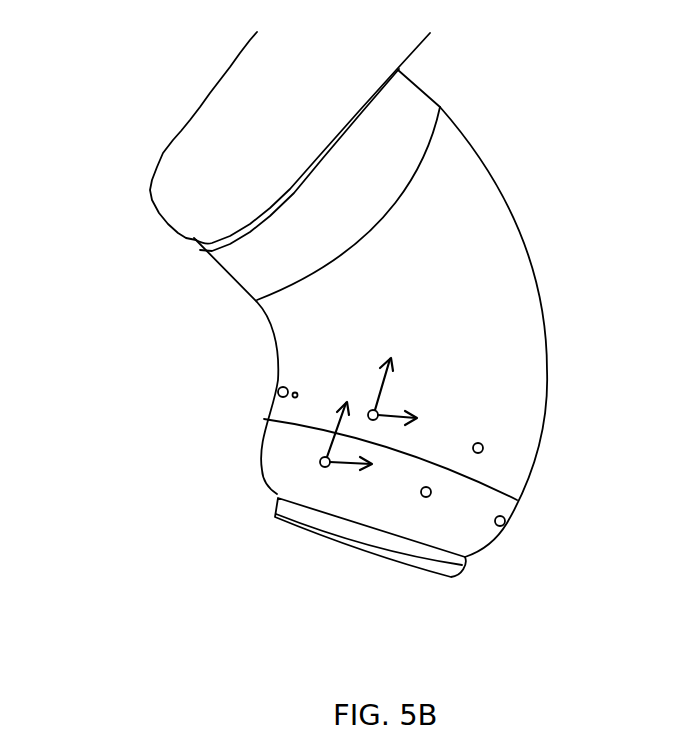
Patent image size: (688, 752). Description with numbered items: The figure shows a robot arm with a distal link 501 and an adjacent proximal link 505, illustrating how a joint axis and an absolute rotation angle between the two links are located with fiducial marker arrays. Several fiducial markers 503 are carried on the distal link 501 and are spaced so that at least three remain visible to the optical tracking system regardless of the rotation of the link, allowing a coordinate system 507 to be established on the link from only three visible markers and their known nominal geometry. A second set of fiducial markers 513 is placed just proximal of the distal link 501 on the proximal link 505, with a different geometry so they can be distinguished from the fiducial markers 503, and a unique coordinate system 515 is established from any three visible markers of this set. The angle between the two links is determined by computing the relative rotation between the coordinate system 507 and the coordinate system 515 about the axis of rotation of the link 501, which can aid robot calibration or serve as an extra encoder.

The link 501 is at (515, 507).
The fiducial markers 503 is at (430, 497).
The sleeve 505 is at (150, 173).
The coordinate system 507 is at (331, 440).
The second set of fiducial markers 513 is at (278, 390).
The coordinate system 515 is at (412, 413).